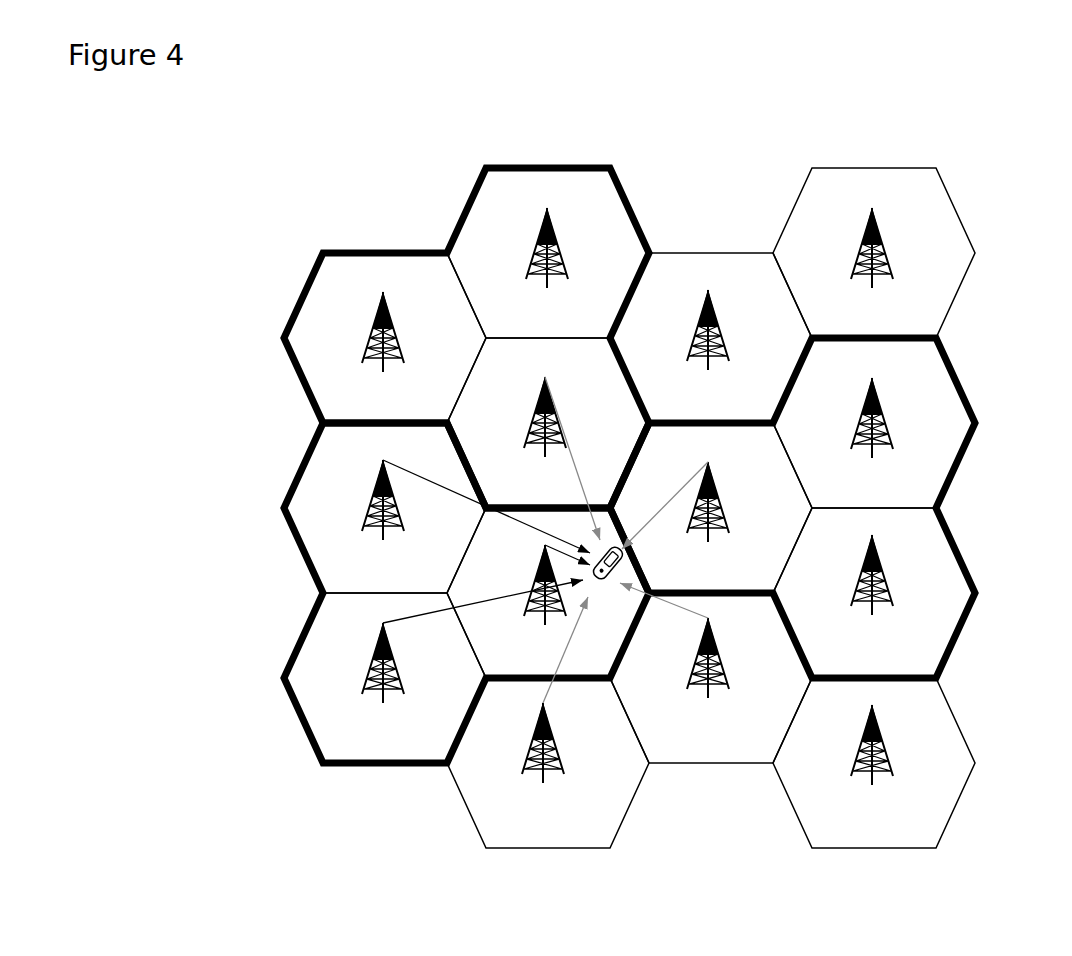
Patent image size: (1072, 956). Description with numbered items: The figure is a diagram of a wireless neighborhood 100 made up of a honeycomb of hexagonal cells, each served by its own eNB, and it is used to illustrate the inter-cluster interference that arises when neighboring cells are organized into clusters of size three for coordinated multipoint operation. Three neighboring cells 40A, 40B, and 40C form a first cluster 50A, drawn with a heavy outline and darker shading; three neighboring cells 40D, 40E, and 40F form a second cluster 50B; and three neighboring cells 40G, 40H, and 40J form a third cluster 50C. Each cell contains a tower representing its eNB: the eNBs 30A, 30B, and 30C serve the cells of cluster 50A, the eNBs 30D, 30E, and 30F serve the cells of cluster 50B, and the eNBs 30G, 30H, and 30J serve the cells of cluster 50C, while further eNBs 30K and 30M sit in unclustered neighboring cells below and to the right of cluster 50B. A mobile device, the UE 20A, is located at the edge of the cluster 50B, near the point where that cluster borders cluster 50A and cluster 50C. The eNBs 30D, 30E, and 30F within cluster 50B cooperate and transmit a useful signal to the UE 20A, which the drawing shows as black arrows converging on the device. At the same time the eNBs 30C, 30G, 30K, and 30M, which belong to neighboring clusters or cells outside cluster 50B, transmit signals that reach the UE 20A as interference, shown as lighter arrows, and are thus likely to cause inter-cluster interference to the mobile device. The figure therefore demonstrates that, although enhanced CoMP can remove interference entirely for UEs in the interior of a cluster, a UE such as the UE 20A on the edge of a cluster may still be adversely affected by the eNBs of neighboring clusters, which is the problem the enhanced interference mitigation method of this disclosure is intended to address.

The wireless neighborhood 100 is at (598, 142).
The UE 20A is at (613, 593).
The eNB 30A is at (379, 387).
The eNB 30B is at (547, 304).
The eNB 30C is at (553, 460).
The eNB 30D is at (380, 560).
The eNB 30E is at (380, 714).
The eNB 30F is at (545, 638).
The eNB 30G is at (709, 555).
The eNB 30H is at (872, 472).
The eNB 30J is at (872, 629).
The eNB 30K is at (545, 800).
The eNB 30M is at (709, 714).
The cell 40A is at (385, 338).
The cell 40B is at (548, 253).
The cell 40C is at (548, 423).
The cell 40D is at (385, 508).
The cell 40E is at (385, 678).
The cell 40F is at (548, 593).
The cell 40G is at (711, 508).
The cell 40H is at (874, 423).
The cell 40J is at (874, 593).
The cluster 50A is at (278, 337).
The cluster 50B is at (278, 677).
The cluster 50C is at (968, 497).